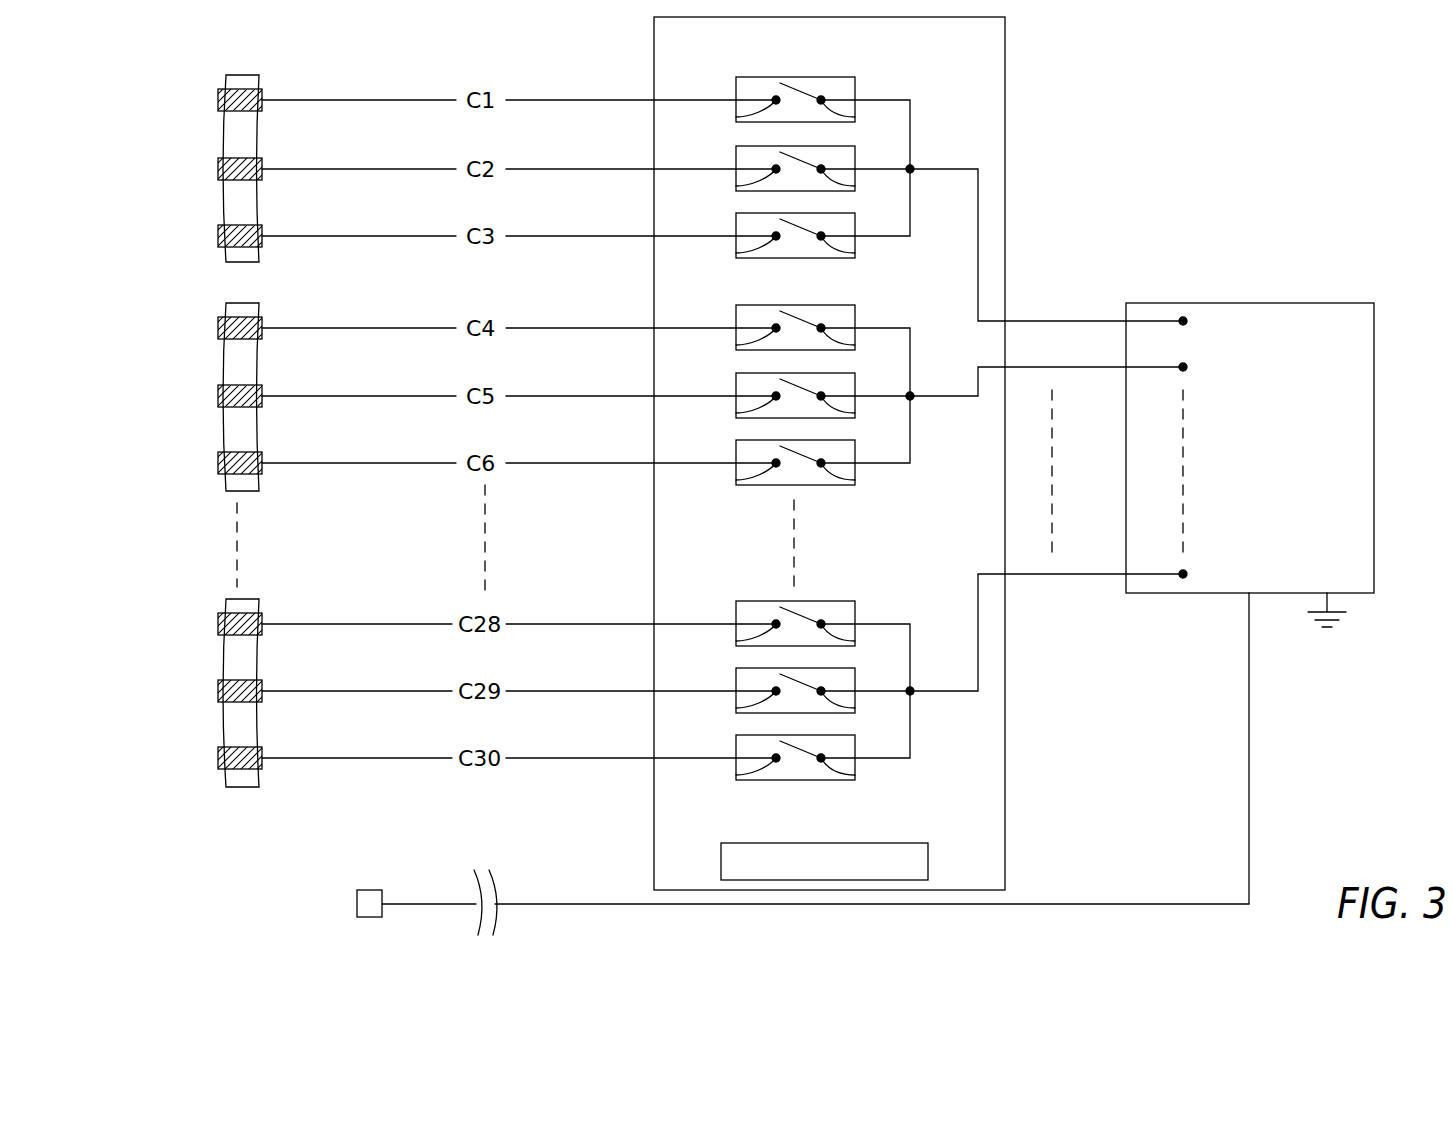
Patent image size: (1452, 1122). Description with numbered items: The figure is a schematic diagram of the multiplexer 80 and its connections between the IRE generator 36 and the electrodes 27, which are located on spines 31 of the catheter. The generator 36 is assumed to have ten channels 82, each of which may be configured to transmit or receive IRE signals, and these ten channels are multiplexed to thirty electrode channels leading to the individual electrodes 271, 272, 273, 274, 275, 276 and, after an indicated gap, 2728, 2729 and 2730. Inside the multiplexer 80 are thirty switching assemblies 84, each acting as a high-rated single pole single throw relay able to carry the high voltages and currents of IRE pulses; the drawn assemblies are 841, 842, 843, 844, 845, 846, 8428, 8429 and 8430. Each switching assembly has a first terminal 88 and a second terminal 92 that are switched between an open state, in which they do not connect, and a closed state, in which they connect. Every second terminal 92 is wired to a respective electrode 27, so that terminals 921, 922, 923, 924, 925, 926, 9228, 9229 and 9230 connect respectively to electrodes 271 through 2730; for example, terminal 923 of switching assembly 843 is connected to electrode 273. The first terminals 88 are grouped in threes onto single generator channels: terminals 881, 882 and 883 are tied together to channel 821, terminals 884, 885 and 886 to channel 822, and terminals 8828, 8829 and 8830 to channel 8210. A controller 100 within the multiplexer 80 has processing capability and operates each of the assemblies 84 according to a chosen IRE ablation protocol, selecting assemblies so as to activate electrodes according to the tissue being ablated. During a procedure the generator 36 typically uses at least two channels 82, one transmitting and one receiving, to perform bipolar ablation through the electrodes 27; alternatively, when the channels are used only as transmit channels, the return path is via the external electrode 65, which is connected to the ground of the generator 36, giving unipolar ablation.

The electrodes 27 is at (232, 816).
The electrode 271 is at (218, 97).
The electrode 272 is at (200, 159).
The electrode 273 is at (200, 226).
The electrode 274 is at (200, 318).
The electrode 275 is at (200, 386).
The electrode 276 is at (200, 453).
The electrode 2728 is at (195, 614).
The electrode 2729 is at (195, 681).
The electrode 2730 is at (195, 748).
The spines 31 is at (258, 128).
The multiplexer 80 is at (1005, 72).
The switching assemblies 84 is at (799, 792).
The switching assembly 841 is at (736, 92).
The switching assembly 842 is at (787, 169).
The switching assembly 843 is at (787, 236).
The switching assembly 844 is at (787, 328).
The switching assembly 845 is at (787, 396).
The switching assembly 846 is at (787, 463).
The switching assembly 8428 is at (779, 624).
The switching assembly 8429 is at (779, 691).
The switching assembly 8430 is at (787, 758).
The second terminal 92 is at (775, 792).
The second terminal 921 is at (736, 117).
The second terminal 922 is at (731, 184).
The second terminal 923 is at (731, 251).
The second terminal 924 is at (731, 343).
The second terminal 925 is at (731, 411).
The second terminal 926 is at (731, 478).
The second terminal 9228 is at (684, 639).
The second terminal 9229 is at (684, 706).
The second terminal 9230 is at (723, 773).
The first terminal 88 is at (824, 792).
The first terminal 881 is at (855, 117).
The first terminal 882 is at (860, 184).
The first terminal 883 is at (860, 251).
The first terminal 884 is at (860, 343).
The first terminal 885 is at (860, 411).
The first terminal 886 is at (860, 478).
The first terminal 8828 is at (894, 639).
The first terminal 8829 is at (894, 706).
The first terminal 8830 is at (865, 773).
The channels 82 is at (1183, 618).
The channel 821 is at (1187, 322).
The channel 822 is at (1187, 368).
The channel 8210 is at (1187, 573).
The IRE generator 36 is at (1374, 366).
The controller 100 is at (928, 864).
The external electrode 65 is at (357, 904).